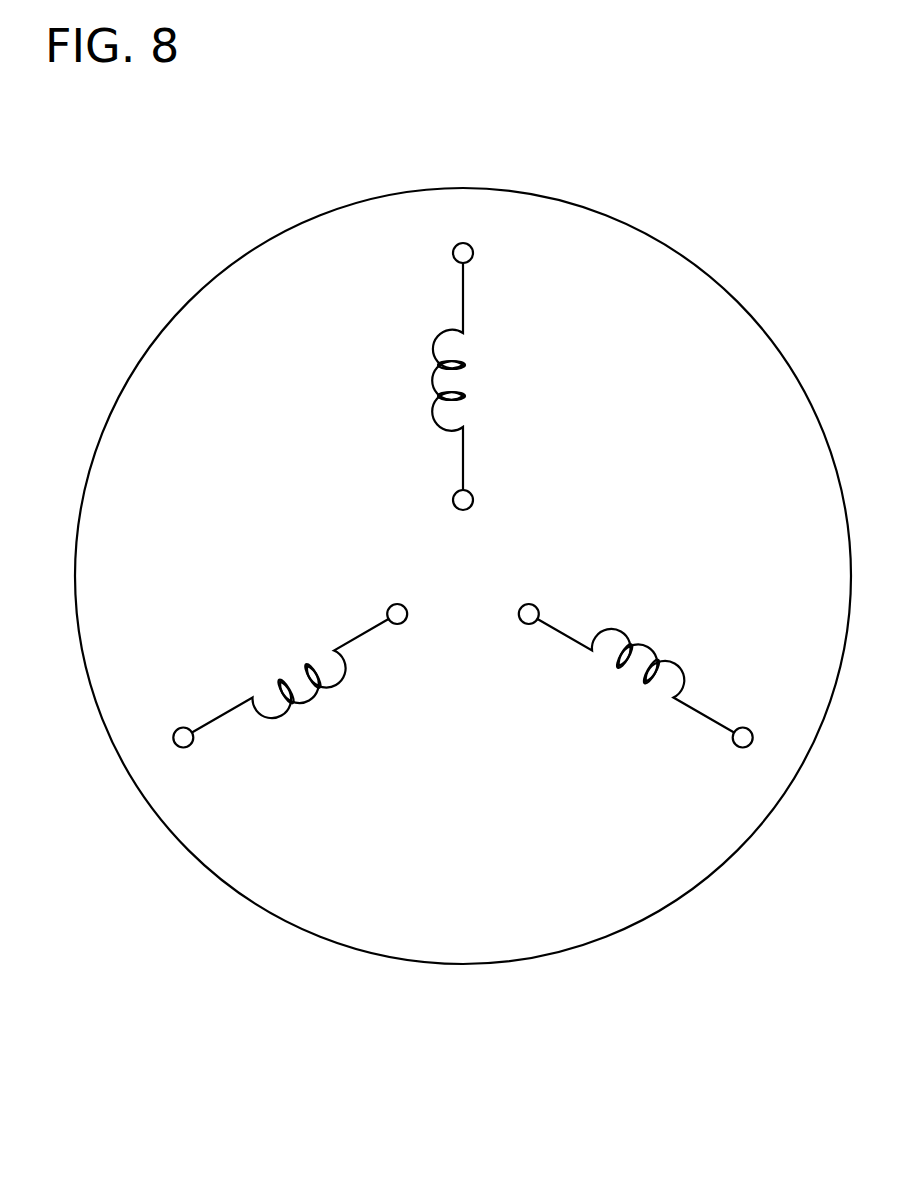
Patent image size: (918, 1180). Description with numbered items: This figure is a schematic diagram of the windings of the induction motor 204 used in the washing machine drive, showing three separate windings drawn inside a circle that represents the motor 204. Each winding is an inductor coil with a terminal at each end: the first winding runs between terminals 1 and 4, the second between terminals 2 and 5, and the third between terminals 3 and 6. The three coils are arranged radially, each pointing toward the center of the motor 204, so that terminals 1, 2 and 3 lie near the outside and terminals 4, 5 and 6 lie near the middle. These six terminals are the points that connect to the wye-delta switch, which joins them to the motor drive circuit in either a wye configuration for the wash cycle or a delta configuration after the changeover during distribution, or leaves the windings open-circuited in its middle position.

The induction motor 204 is at (672, 249).
The winding terminal 1 is at (463, 235).
The winding terminal 2 is at (169, 749).
The winding terminal 3 is at (756, 752).
The winding terminal 4 is at (463, 518).
The winding terminal 5 is at (410, 612).
The winding terminal 6 is at (514, 612).